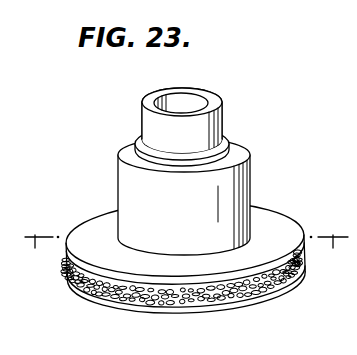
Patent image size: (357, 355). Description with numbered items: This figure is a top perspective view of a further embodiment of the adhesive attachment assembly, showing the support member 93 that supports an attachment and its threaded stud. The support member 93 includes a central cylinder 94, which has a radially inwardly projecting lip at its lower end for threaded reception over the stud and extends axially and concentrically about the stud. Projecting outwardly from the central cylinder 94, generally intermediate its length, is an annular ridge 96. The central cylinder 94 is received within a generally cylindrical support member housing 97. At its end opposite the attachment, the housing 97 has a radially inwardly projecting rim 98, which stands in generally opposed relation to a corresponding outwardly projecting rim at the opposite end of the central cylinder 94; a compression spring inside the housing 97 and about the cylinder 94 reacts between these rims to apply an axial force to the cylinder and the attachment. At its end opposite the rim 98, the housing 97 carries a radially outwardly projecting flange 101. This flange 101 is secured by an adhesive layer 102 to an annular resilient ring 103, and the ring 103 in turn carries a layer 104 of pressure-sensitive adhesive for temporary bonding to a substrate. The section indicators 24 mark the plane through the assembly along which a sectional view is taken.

The section line 24- 24 is at (338, 257).
The support member 93 is at (272, 154).
The central cylinder 94 is at (202, 128).
The annular ridge 96 is at (152, 157).
The support member housing 97 is at (132, 180).
The radially inwardly projecting rim 98 is at (124, 156).
The radially outwardly projecting flange 101 is at (268, 220).
The adhesive layer 102 is at (87, 273).
The annular resilient ring 103 is at (96, 292).
The layer of pressure-sensitive adhesive 104 is at (220, 312).